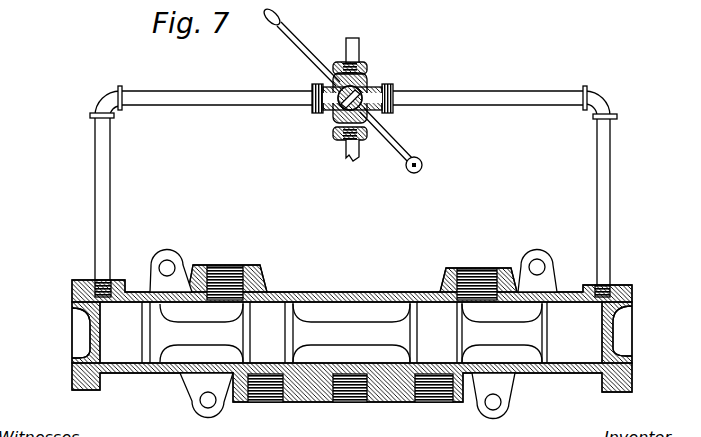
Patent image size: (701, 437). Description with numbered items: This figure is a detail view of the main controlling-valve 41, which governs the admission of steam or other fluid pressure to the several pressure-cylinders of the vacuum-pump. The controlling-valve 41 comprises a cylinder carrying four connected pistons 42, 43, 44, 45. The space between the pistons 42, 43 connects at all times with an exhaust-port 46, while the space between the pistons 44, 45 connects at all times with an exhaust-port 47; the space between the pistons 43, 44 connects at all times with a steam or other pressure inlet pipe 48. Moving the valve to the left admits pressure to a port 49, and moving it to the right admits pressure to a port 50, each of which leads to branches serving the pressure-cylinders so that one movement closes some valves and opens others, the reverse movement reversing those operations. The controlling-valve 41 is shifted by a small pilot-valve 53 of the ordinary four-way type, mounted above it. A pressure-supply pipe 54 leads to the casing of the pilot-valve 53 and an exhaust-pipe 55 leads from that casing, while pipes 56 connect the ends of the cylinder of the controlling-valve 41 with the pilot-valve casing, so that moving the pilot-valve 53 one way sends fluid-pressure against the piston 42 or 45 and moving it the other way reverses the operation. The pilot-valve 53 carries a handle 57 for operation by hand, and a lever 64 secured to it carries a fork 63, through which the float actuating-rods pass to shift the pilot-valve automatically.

The main controlling-valve 41 is at (352, 333).
The piston 42 is at (150, 331).
The piston 43 is at (268, 332).
The piston 44 is at (436, 332).
The piston 45 is at (555, 331).
The exhaust-port 46 is at (236, 261).
The exhaust-port 47 is at (491, 263).
The pressure inlet pipe 48 is at (348, 398).
The port 49 is at (265, 398).
The port 50 is at (434, 398).
The pilot-valve 53 is at (352, 101).
The pressure-supply pipe 54 is at (388, 50).
The exhaust-pipe 55 is at (358, 152).
The pipes 56 is at (363, 185).
The handle 57 is at (300, 46).
The fork 63 is at (416, 174).
The lever 64 is at (391, 135).